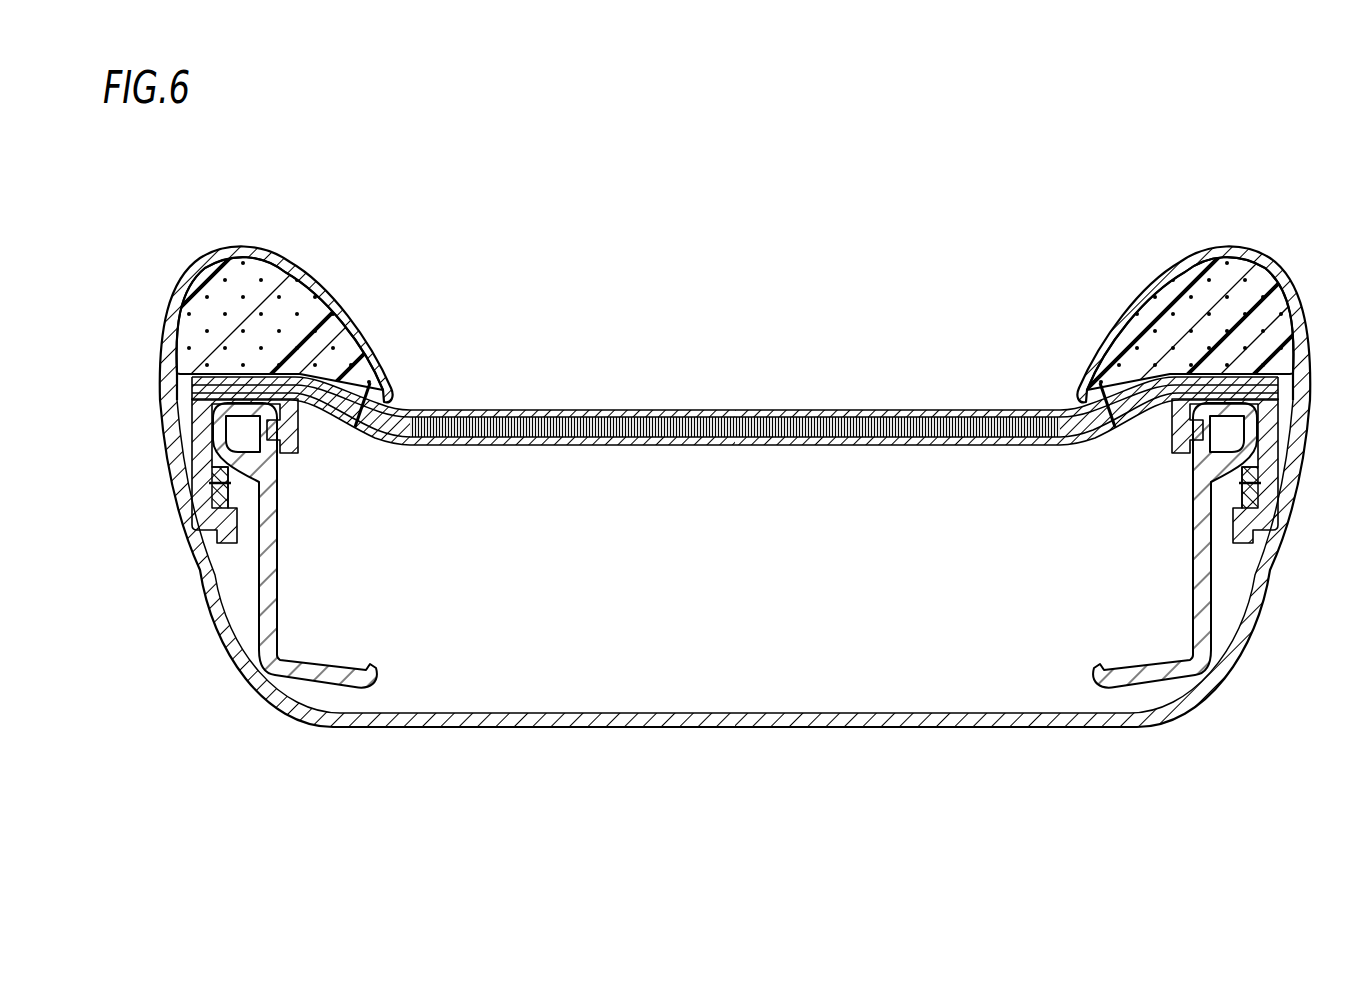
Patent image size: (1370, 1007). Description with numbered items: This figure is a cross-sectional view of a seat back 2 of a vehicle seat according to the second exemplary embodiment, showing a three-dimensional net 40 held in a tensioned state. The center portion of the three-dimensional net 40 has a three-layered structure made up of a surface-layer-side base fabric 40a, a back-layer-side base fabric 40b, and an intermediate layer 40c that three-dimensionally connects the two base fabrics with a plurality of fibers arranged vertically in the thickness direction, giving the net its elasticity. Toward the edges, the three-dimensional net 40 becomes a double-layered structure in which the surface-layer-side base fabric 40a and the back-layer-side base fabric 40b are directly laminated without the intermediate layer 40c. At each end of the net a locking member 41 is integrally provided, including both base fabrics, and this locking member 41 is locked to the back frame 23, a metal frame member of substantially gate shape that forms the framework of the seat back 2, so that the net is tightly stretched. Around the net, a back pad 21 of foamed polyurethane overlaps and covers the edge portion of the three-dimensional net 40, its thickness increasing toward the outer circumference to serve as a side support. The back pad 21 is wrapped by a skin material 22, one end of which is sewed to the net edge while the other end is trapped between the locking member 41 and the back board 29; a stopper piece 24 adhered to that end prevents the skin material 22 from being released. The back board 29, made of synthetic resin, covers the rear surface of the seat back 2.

The seat back 2 is at (719, 467).
The back pad 21 is at (243, 258).
The skin material 22 is at (327, 300).
The back frame 23 is at (267, 590).
The stopper piece 24 is at (213, 492).
The back board 29 is at (738, 722).
The three-dimensional net 40 is at (735, 424).
The surface-layer-side base fabric 40a is at (609, 412).
The back-layer-side base fabric 40b is at (637, 443).
The intermediate layer 40c is at (800, 427).
The locking member 41 is at (200, 448).